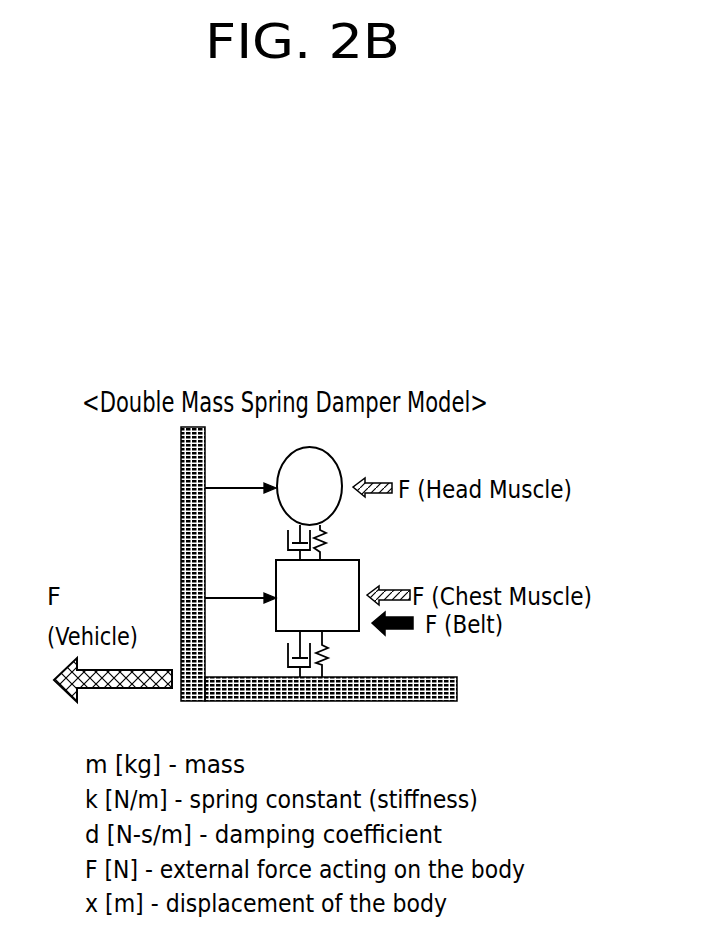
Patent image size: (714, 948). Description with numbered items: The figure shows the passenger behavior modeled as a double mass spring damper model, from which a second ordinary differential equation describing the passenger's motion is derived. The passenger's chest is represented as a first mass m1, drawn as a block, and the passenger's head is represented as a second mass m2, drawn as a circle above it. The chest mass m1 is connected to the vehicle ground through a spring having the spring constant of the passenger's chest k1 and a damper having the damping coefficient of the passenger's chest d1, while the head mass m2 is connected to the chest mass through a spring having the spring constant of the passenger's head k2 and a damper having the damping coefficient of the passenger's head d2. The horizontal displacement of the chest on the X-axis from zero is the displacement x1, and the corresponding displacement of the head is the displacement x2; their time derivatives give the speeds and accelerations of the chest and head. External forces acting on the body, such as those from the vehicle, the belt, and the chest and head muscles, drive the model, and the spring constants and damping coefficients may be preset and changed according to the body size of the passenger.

The mass of passenger's chest m1 is at (317, 595).
The mass of passenger's head m2 is at (309, 486).
The spring constant of passenger's chest k1 is at (346, 654).
The spring constant of passenger's head k2 is at (345, 542).
The damping coefficient of passenger's chest d1 is at (278, 654).
The damping coefficient of passenger's head d2 is at (278, 542).
The displacement of passenger's chest x1 is at (240, 584).
The displacement of passenger's head x2 is at (240, 476).